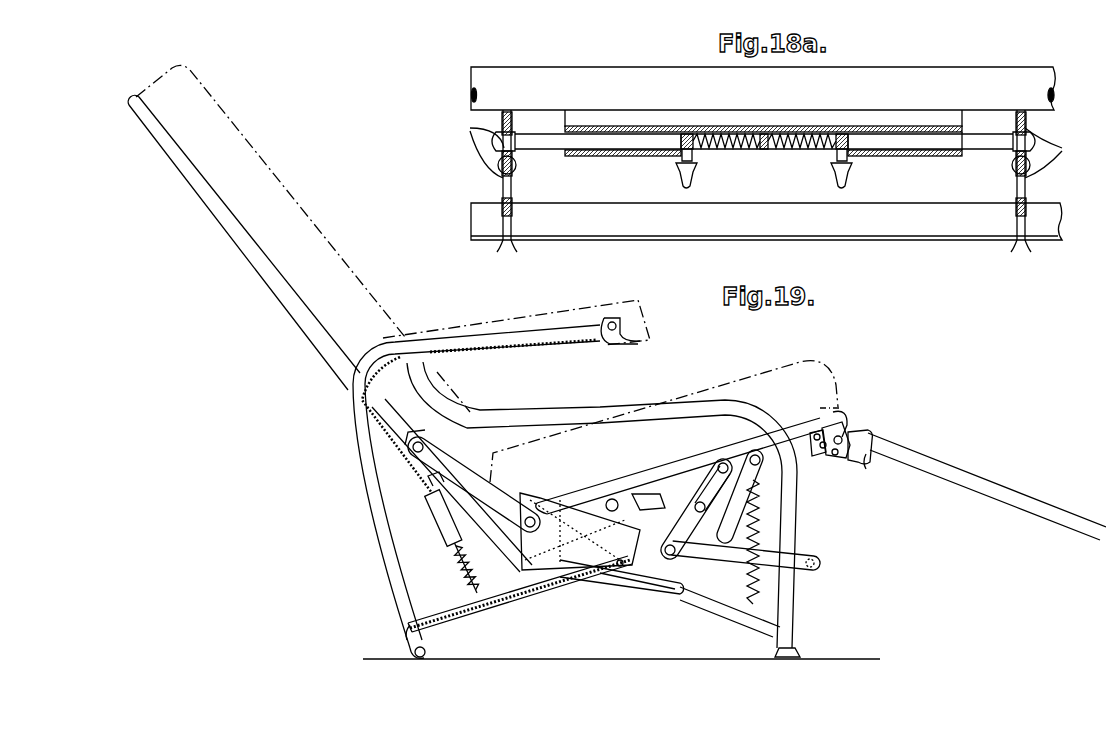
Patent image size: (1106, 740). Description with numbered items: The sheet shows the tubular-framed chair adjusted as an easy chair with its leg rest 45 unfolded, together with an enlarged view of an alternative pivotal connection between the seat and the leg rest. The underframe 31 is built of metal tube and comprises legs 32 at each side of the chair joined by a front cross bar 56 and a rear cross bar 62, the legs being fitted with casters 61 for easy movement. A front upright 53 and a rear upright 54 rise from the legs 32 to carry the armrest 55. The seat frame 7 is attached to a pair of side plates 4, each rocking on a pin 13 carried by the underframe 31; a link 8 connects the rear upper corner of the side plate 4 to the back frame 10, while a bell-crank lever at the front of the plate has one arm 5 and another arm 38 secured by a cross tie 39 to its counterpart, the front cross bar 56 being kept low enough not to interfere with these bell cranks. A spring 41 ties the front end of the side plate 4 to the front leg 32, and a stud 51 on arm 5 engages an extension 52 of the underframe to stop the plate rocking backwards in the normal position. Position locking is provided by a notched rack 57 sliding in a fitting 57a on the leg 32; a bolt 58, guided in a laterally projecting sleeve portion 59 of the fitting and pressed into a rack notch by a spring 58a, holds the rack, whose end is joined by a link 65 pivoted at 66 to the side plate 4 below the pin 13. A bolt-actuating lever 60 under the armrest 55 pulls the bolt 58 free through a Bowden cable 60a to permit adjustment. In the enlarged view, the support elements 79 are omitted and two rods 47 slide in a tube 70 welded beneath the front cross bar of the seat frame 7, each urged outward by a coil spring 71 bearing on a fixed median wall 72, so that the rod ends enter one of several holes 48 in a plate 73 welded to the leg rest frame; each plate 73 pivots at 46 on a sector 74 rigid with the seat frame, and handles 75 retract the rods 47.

In FIG. 19, the side plate 4 is at (580, 531).
In FIG. 19, the bell-crank lever arm 5 is at (683, 530).
In FIG. 18A, the seat frame 7 is at (763, 88).
In FIG. 19, the seat frame 7 is at (683, 468).
In FIG. 19, the link 8 is at (476, 428).
In FIG. 19, the back frame 10 is at (312, 343).
In FIG. 19, the pin 13 is at (612, 498).
In FIG. 19, the underframe 31 is at (608, 585).
In FIG. 19, the tubular leg 32 is at (522, 598).
In FIG. 19, the bell-crank lever arm 38 is at (810, 555).
In FIG. 19, the cross tie 39 is at (815, 570).
In FIG. 19, the spring 41 is at (756, 500).
In FIG. 18A, the leg rest 45 is at (766, 221).
In FIG. 19, the leg rest 45 is at (958, 470).
In FIG. 18A, the pivot 46 is at (517, 165).
In FIG. 19, the pivot 46 is at (822, 452).
In FIG. 18A, the rod 47 is at (603, 140).
In FIG. 19, the rod 47 is at (863, 423).
In FIG. 18A, the hole 48 is at (762, 150).
In FIG. 19, the hole 48 is at (813, 432).
In FIG. 19, the stud 51 is at (700, 500).
In FIG. 19, the extension 52 is at (655, 492).
In FIG. 19, the front upright 53 is at (368, 545).
In FIG. 19, the rear upright 54 is at (798, 516).
In FIG. 19, the armrest 55 is at (505, 328).
In FIG. 19, the front cross bar 56 is at (742, 620).
In FIG. 19, the rack 57 is at (470, 624).
In FIG. 19, the fitting 57a is at (500, 614).
In FIG. 19, the bolt 58 is at (460, 580).
In FIG. 19, the spring 58a is at (462, 540).
In FIG. 19, the sleeve portion 59 is at (466, 556).
In FIG. 19, the bolt-actuating lever 60 is at (622, 344).
In FIG. 19, the Bowden cable 60a is at (506, 348).
In FIG. 19, the caster 61 is at (414, 655).
In FIG. 19, the rear cross bar 62 is at (404, 628).
In FIG. 19, the link 65 is at (578, 582).
In FIG. 19, the pivot 66 is at (623, 560).
In FIG. 18A, the tube 70 is at (895, 152).
In FIG. 18A, the coil spring 71 is at (723, 150).
In FIG. 18A, the median wall 72 is at (765, 150).
In FIG. 18A, the plate 73 is at (511, 206).
In FIG. 19, the plate 73 is at (866, 464).
In FIG. 18A, the sector 74 is at (513, 118).
In FIG. 19, the sector 74 is at (845, 428).
In FIG. 18A, the handle 75 is at (681, 174).
In FIG. 19, the support element 79 is at (835, 420).